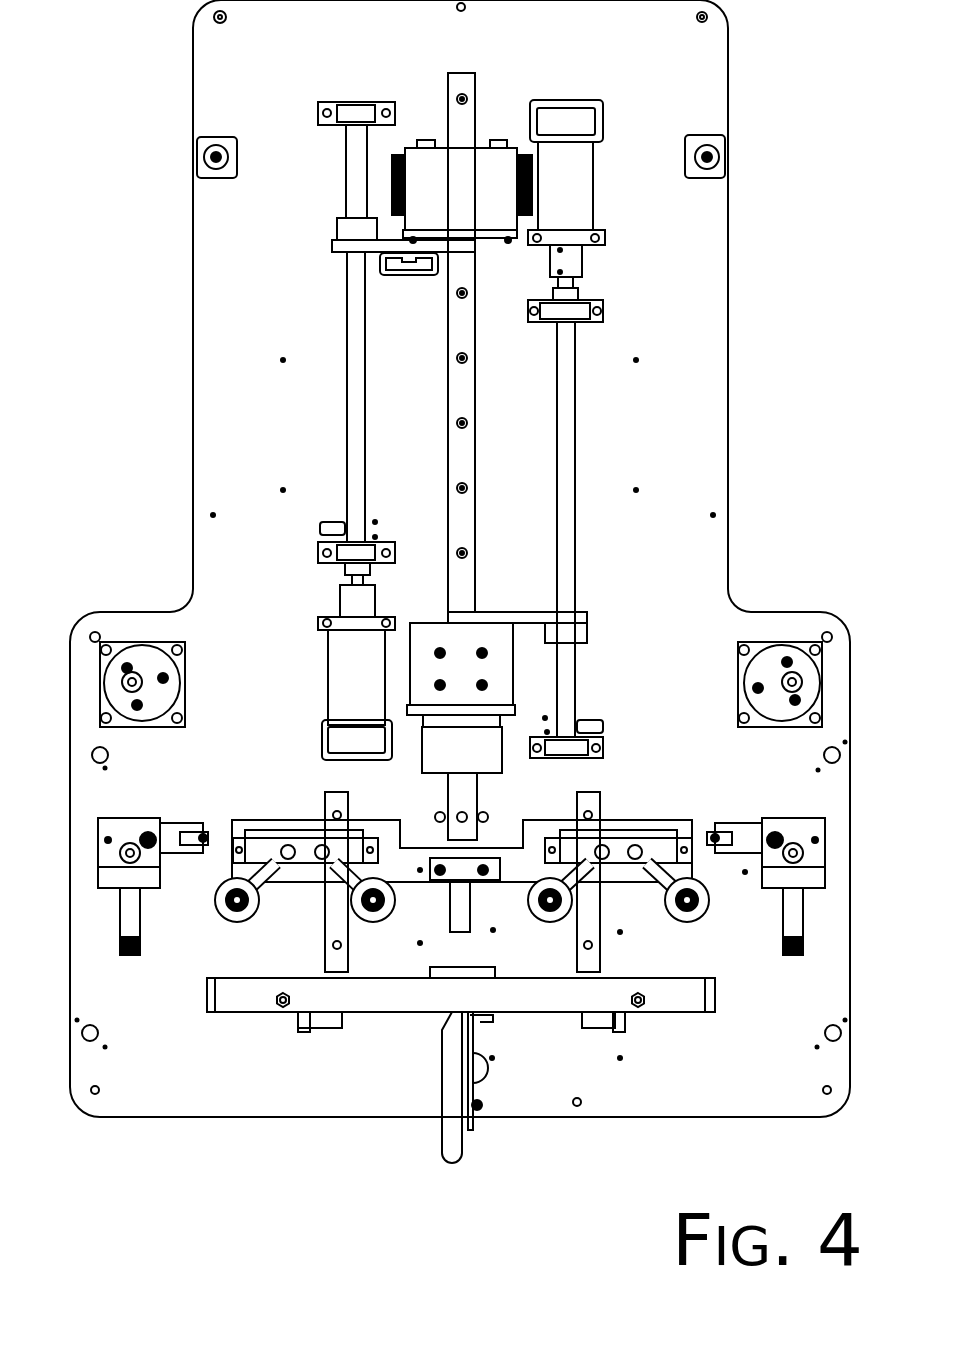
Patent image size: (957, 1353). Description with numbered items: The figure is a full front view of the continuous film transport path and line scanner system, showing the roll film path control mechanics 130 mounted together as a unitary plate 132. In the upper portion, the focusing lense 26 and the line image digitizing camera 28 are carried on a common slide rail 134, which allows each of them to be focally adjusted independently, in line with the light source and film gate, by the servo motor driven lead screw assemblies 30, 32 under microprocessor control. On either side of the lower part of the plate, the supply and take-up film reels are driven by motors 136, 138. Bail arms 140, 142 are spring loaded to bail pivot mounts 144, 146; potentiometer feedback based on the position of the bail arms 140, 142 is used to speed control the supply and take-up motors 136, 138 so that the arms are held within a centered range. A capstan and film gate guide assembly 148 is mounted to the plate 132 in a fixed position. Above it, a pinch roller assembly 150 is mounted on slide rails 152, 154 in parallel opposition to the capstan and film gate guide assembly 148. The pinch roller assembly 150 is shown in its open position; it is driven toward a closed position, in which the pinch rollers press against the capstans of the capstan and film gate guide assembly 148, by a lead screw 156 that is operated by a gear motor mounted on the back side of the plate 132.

The roll film path control mechanics 130 is at (505, 1192).
The unitary plate 132 is at (652, 52).
The common slide rail 134 is at (475, 403).
The focusing lense 26 is at (477, 764).
The line image digitizing camera 28 is at (480, 202).
The servo motor driven lead screw assembly 30 is at (593, 180).
The servo motor driven lead screw assembly 32 is at (328, 677).
The supply reel motor 136 is at (185, 670).
The take-up reel motor 138 is at (738, 658).
The bail arm 140 is at (138, 957).
The bail arm 142 is at (793, 957).
The bail pivot mount 144 is at (138, 815).
The bail pivot mount 146 is at (790, 817).
The capstan and film gate guide assembly 148 is at (517, 1015).
The pinch roller assembly 150 is at (640, 818).
The slide rail 152 is at (323, 923).
The slide rail 154 is at (603, 907).
The lead screw 156 is at (477, 935).